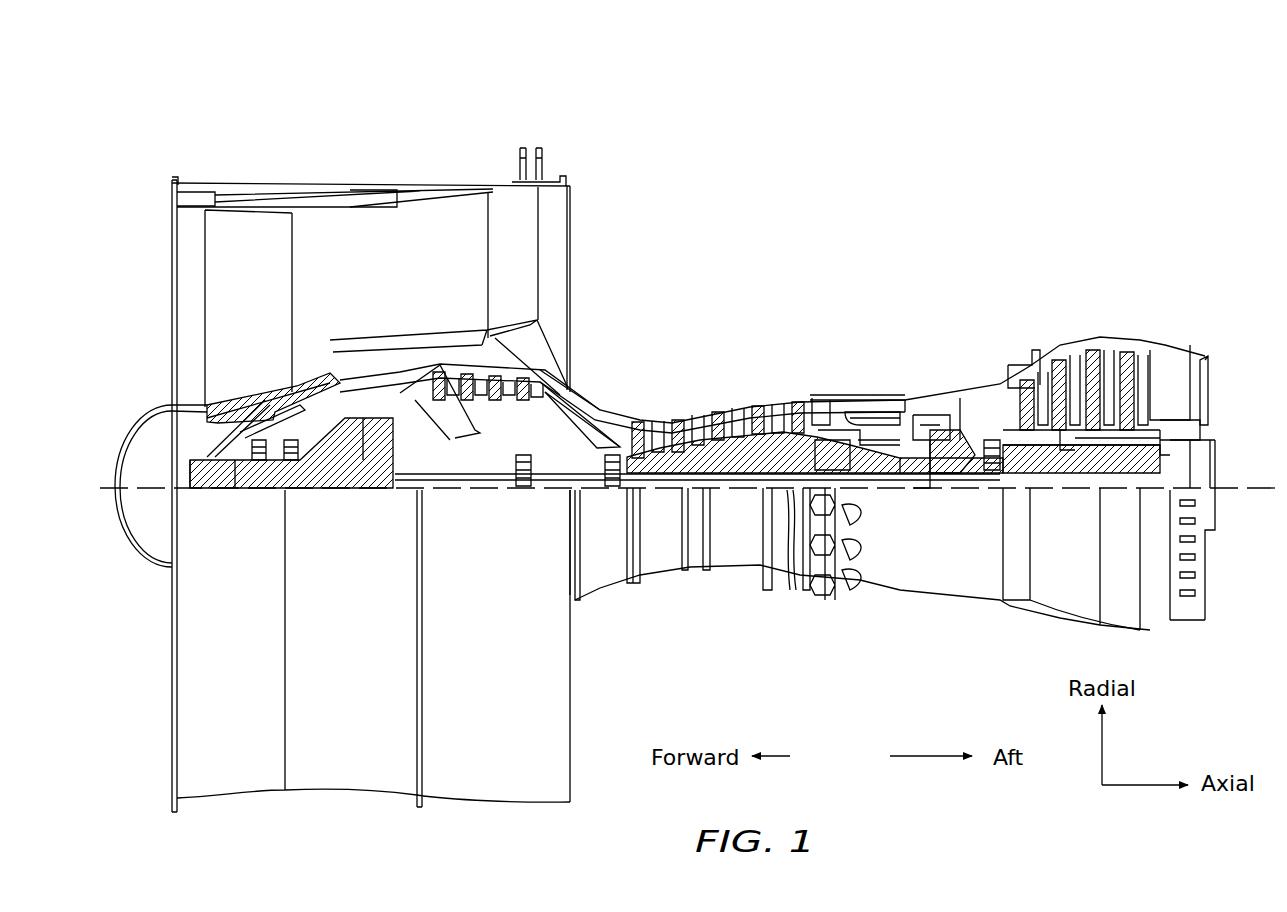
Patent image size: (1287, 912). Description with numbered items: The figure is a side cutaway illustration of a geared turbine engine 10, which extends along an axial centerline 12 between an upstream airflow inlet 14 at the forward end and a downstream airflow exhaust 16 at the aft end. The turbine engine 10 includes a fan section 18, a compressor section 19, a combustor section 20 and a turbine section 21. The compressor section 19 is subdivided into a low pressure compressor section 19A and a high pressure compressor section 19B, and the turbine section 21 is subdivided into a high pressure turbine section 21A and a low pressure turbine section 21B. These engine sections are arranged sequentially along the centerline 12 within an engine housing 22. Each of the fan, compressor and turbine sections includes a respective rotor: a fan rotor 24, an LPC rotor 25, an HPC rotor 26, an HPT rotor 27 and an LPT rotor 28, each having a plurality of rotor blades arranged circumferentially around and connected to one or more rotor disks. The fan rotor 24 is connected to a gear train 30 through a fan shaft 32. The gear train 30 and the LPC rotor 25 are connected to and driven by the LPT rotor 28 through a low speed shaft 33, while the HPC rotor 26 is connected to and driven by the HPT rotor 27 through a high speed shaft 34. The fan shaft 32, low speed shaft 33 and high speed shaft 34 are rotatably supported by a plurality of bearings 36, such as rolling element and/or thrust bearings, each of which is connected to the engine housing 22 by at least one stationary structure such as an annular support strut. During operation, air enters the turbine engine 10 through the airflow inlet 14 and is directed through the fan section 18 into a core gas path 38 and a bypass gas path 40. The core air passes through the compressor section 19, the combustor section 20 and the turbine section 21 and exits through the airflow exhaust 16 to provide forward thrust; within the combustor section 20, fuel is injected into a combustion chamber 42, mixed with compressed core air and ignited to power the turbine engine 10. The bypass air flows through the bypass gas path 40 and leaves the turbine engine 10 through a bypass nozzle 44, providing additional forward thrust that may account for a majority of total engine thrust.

The geared turbine engine 10 is at (140, 162).
The axial centerline 12 is at (1262, 494).
The upstream airflow inlet 14 is at (172, 255).
The downstream airflow exhaust 16 is at (1207, 383).
The fan section 18 is at (338, 163).
The compressor section 19 is at (787, 102).
The low pressure compressor (LPC) section 19A is at (572, 147).
The high pressure compressor (HPC) section 19B is at (785, 332).
The combustor section 20 is at (905, 328).
The turbine section 21 is at (1165, 265).
The high pressure turbine (HPT) section 21A is at (987, 328).
The low pressure turbine (LPT) section 21B is at (1165, 328).
The engine housing 22 is at (588, 598).
The fan rotor 24 is at (172, 408).
The LPC rotor 25 is at (480, 435).
The HPC rotor 26 is at (733, 447).
The HPT rotor 27 is at (937, 465).
The LPT rotor 28 is at (1075, 440).
The gear train 30 is at (377, 486).
The fan shaft 32 is at (238, 492).
The low speed shaft 33 is at (793, 560).
The high speed shaft 34 is at (875, 470).
The bearings 36 is at (297, 458).
The core gas path 38 is at (588, 417).
The bypass gas path 40 is at (422, 270).
The combustion chamber 42 is at (867, 427).
The bypass nozzle 44 is at (570, 237).